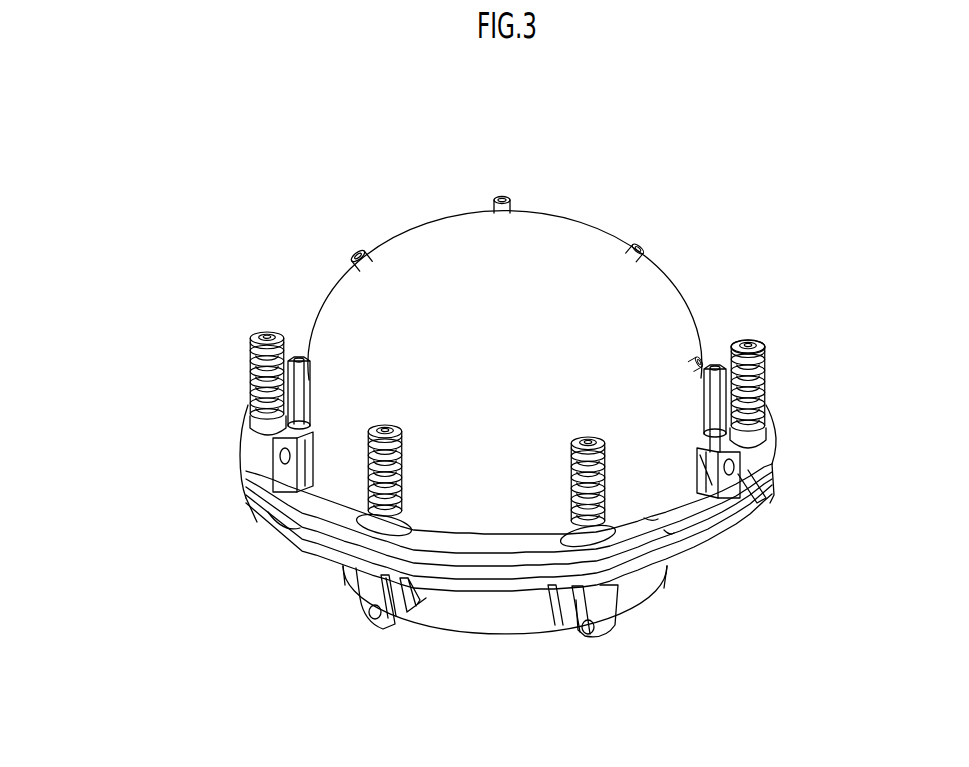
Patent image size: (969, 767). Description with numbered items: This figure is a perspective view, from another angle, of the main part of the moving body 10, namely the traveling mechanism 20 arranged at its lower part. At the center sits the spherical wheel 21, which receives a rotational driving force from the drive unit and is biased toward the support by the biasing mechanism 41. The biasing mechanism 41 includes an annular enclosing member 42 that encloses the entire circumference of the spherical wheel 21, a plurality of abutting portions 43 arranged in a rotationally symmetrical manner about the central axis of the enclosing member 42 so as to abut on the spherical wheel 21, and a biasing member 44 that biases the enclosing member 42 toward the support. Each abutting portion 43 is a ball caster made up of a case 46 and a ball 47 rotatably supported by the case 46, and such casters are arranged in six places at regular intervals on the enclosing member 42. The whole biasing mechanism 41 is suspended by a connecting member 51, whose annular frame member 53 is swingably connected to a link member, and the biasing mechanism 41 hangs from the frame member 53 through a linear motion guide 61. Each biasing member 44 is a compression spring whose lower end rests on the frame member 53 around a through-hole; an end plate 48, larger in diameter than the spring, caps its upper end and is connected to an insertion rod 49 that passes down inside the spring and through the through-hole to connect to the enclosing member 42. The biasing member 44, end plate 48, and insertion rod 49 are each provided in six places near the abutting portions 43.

The moving body 10 is at (110, 180).
The traveling mechanism 20 is at (140, 314).
The spherical wheel 21 is at (505, 640).
The biasing mechanism 41 is at (237, 357).
The enclosing member 42 is at (710, 533).
The abutting portion 43 is at (480, 654).
The biasing member 44 is at (763, 390).
The case 46 is at (362, 612).
The ball 47 is at (428, 597).
The end plate 48 is at (762, 345).
The insertion rod 49 is at (767, 425).
The connecting member 51 is at (498, 195).
The frame member 53 is at (650, 523).
The linear motion guide 61 is at (290, 525).